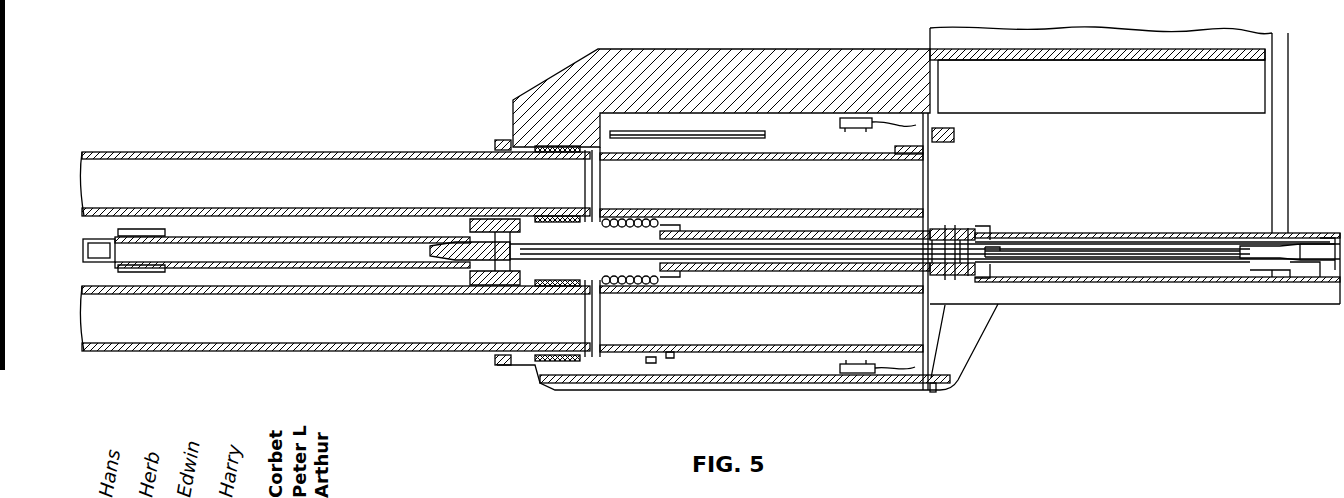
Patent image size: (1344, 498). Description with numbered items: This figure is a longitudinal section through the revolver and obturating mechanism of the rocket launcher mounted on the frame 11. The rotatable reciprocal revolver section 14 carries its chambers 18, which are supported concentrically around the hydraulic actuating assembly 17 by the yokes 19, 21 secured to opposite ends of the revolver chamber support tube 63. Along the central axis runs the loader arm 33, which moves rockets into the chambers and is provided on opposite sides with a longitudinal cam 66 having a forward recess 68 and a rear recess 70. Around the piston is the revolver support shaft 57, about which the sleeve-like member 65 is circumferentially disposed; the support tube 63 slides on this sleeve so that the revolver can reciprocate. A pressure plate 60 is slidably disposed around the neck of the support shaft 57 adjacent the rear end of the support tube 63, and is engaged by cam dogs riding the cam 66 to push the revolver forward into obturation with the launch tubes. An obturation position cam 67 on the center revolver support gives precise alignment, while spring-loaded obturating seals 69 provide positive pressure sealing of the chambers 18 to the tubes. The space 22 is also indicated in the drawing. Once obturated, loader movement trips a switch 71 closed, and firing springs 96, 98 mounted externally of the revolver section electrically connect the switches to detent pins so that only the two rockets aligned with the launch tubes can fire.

The frame 11 is at (578, 62).
The revolver section 14 is at (396, 189).
The hydraulic actuating assembly 17 is at (443, 234).
The revolver chamber 18 is at (752, 191).
The yoke 19 is at (672, 357).
The yoke 21 is at (912, 158).
The chamber 22 is at (1158, 172).
The loader arm 33 is at (1095, 255).
The revolver support shaft 57 is at (793, 275).
The pressure plate 60 is at (933, 270).
The revolver chamber support tube 63 is at (690, 285).
The sleeve-like member 65 is at (845, 283).
The longitudinal cam 66 is at (1183, 258).
The obturation position cam 67 is at (612, 219).
The forward recess 68 is at (975, 240).
The obturating seal 69 is at (604, 165).
The rear recess 70 is at (1243, 246).
The switch 71 is at (1265, 275).
The firing spring 96 is at (905, 125).
The firing spring 98 is at (905, 375).